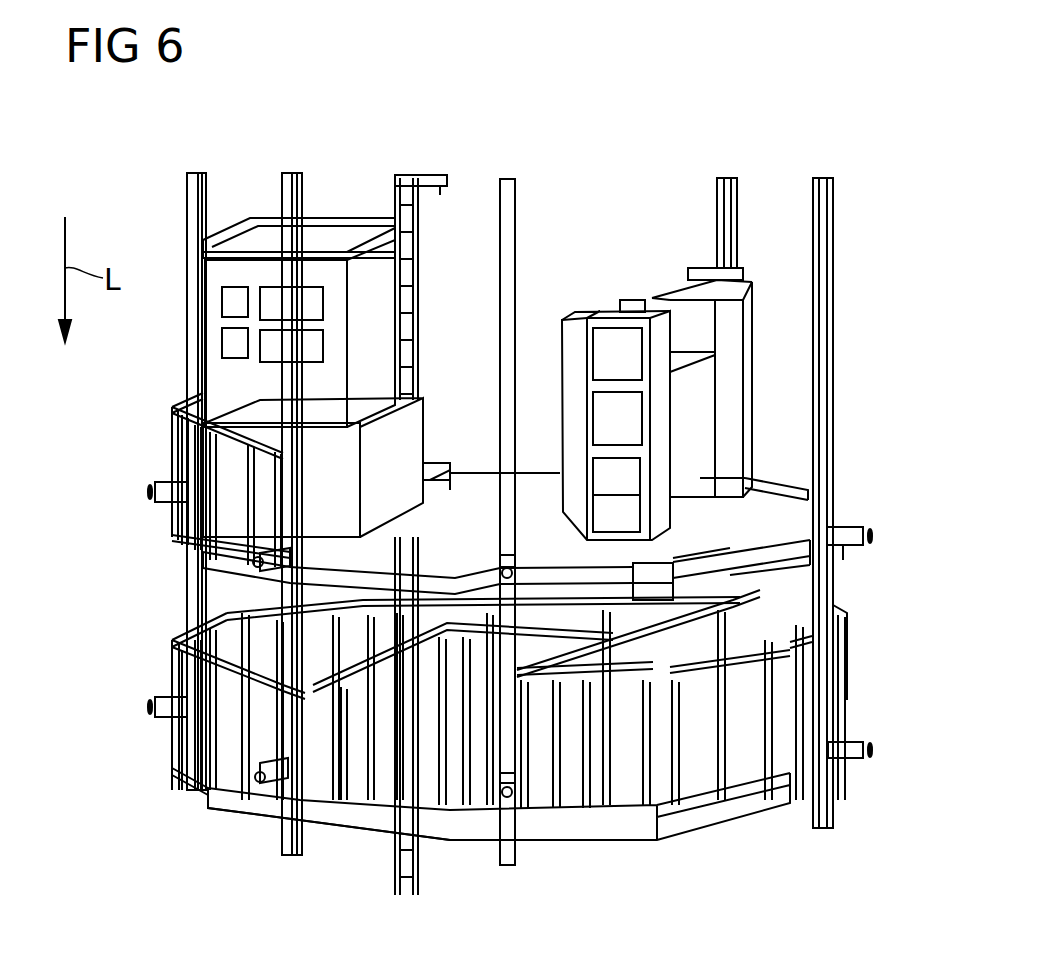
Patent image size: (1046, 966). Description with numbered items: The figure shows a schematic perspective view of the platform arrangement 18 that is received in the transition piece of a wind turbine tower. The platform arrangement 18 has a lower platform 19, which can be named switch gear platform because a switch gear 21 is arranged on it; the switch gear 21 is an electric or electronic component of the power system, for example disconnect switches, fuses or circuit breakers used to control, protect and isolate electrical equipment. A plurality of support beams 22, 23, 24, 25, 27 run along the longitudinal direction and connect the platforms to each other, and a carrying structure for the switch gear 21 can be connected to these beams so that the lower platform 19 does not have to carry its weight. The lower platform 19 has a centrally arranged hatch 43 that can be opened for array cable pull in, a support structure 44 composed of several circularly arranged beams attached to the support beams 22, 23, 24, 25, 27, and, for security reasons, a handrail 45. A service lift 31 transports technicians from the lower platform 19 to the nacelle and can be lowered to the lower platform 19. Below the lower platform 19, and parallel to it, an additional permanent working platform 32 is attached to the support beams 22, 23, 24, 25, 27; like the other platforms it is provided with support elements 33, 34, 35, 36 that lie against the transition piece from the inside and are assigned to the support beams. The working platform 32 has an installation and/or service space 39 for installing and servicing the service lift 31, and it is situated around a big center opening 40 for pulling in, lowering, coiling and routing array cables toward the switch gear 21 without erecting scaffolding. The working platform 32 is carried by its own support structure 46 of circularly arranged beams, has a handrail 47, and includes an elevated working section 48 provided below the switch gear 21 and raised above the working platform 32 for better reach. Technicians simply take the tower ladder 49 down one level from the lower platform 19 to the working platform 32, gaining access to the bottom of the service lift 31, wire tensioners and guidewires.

The platform arrangement 18 is at (591, 138).
The lower platform 19 is at (787, 515).
The switch gear 21 is at (752, 405).
The support beam 22 is at (834, 270).
The support beam 23 is at (513, 256).
The support beam 24 is at (289, 178).
The support beam 25 is at (191, 178).
The support beam 27 is at (740, 190).
The service lift 31 is at (323, 268).
The working platform 32 is at (218, 756).
The support element 33 is at (873, 532).
The support element 34 is at (505, 565).
The support element 35 is at (222, 575).
The support element 36 is at (145, 490).
The installation and/or service space 39 is at (238, 763).
The opening 40 is at (452, 805).
The hatch 43 is at (485, 478).
The support structure 44 is at (757, 587).
The handrail 45 is at (180, 512).
The support structure 46 is at (483, 843).
The handrail 47 is at (175, 658).
The elevated working section 48 is at (733, 748).
The tower ladder 49 is at (392, 888).